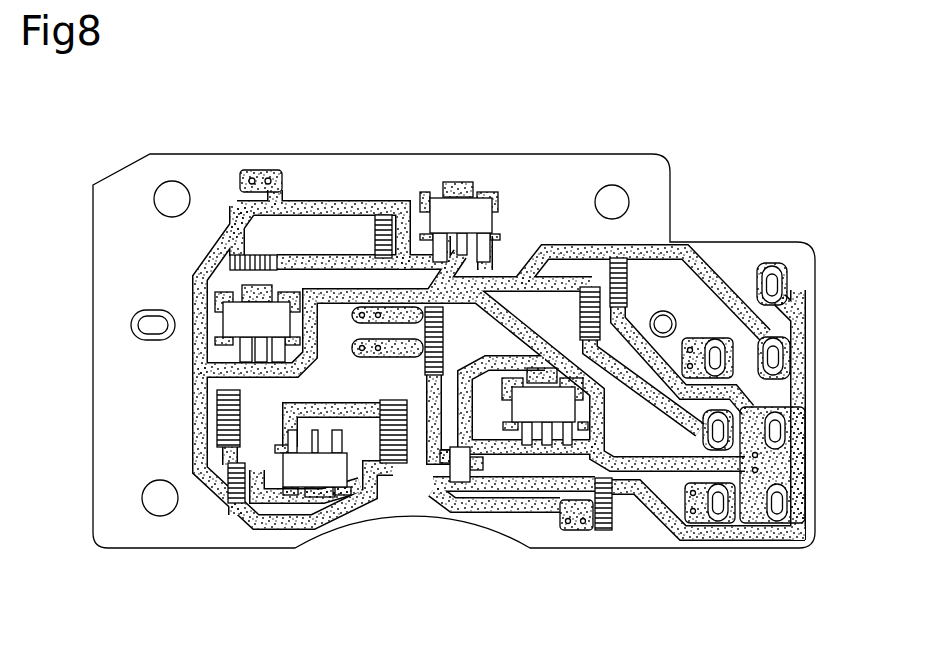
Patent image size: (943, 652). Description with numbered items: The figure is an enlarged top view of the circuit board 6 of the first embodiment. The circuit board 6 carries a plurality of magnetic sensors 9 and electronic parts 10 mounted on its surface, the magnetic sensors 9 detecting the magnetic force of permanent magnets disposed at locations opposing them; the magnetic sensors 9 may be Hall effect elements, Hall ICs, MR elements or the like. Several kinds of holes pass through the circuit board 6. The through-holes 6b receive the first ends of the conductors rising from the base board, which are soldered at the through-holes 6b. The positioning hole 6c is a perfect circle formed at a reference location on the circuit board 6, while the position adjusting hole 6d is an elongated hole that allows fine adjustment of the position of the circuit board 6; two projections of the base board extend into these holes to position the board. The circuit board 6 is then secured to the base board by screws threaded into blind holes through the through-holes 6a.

The circuit board 6 is at (490, 154).
The through-holes 6a is at (173, 182).
The through-holes 6b is at (717, 430).
The positioning hole 6c is at (667, 311).
The position adjusting hole 6d is at (132, 326).
The magnetic sensors 9 is at (277, 318).
The electronic parts 10 is at (228, 425).